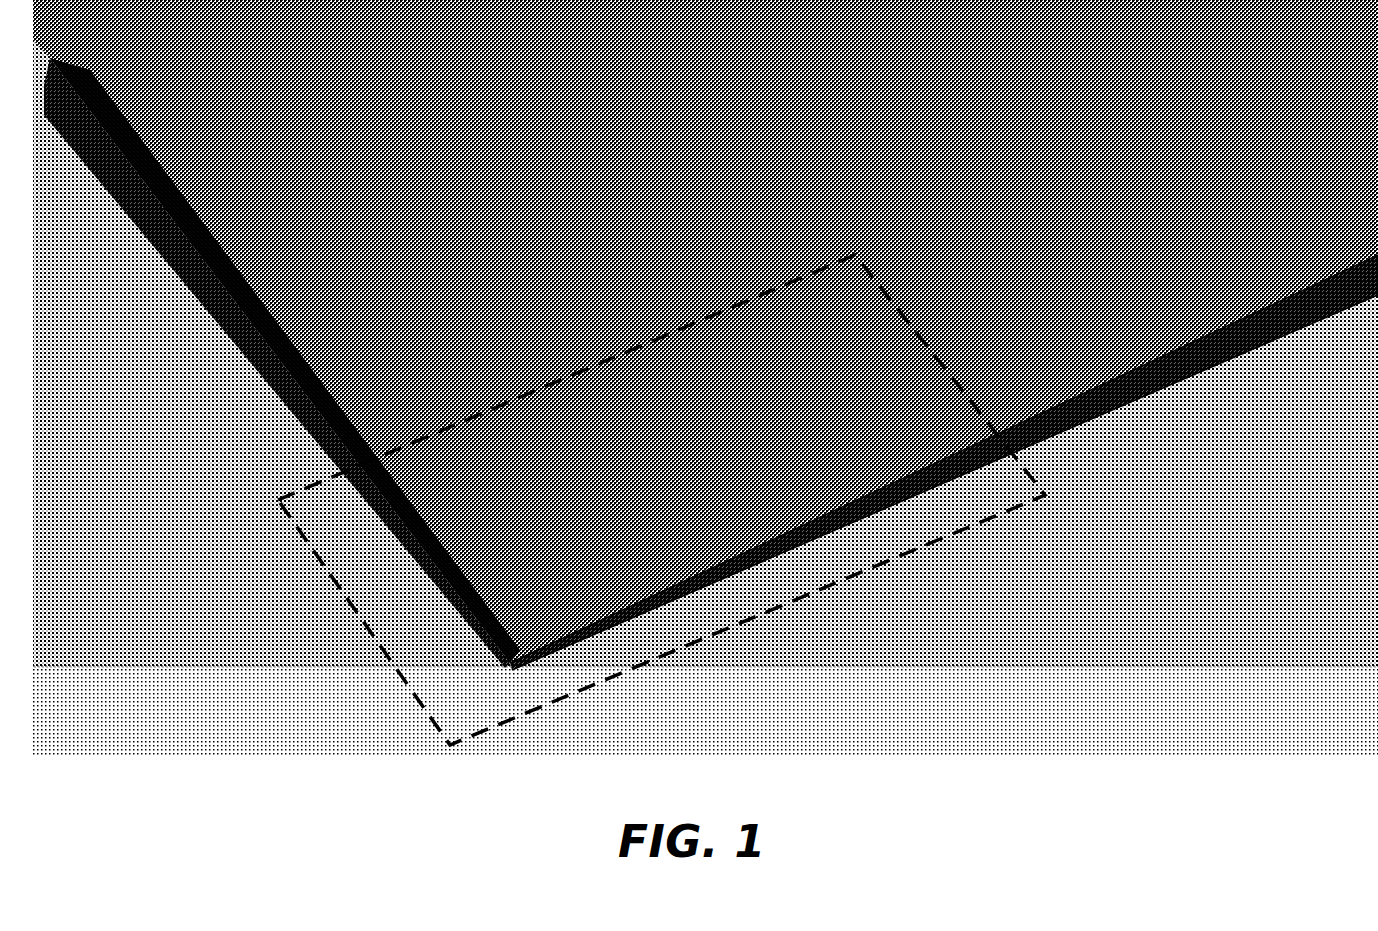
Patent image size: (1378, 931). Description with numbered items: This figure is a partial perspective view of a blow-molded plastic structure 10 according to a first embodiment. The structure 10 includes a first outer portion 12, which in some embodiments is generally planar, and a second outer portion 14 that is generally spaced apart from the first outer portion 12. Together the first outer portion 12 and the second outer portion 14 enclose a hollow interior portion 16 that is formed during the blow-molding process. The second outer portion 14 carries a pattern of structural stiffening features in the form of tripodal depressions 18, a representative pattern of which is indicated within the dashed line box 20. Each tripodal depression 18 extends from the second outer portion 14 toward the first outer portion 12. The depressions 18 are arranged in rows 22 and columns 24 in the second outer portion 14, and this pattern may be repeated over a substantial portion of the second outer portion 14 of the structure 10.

The blow-molded plastic structure 10 is at (211, 506).
The first outer portion 12 is at (1166, 417).
The second outer portion 14 is at (884, 314).
The hollow interior portion 16 is at (1077, 414).
The tripodal depression 18 is at (447, 491).
The dashed line box 20 is at (842, 585).
The row 22 is at (420, 598).
The column 24 is at (732, 603).